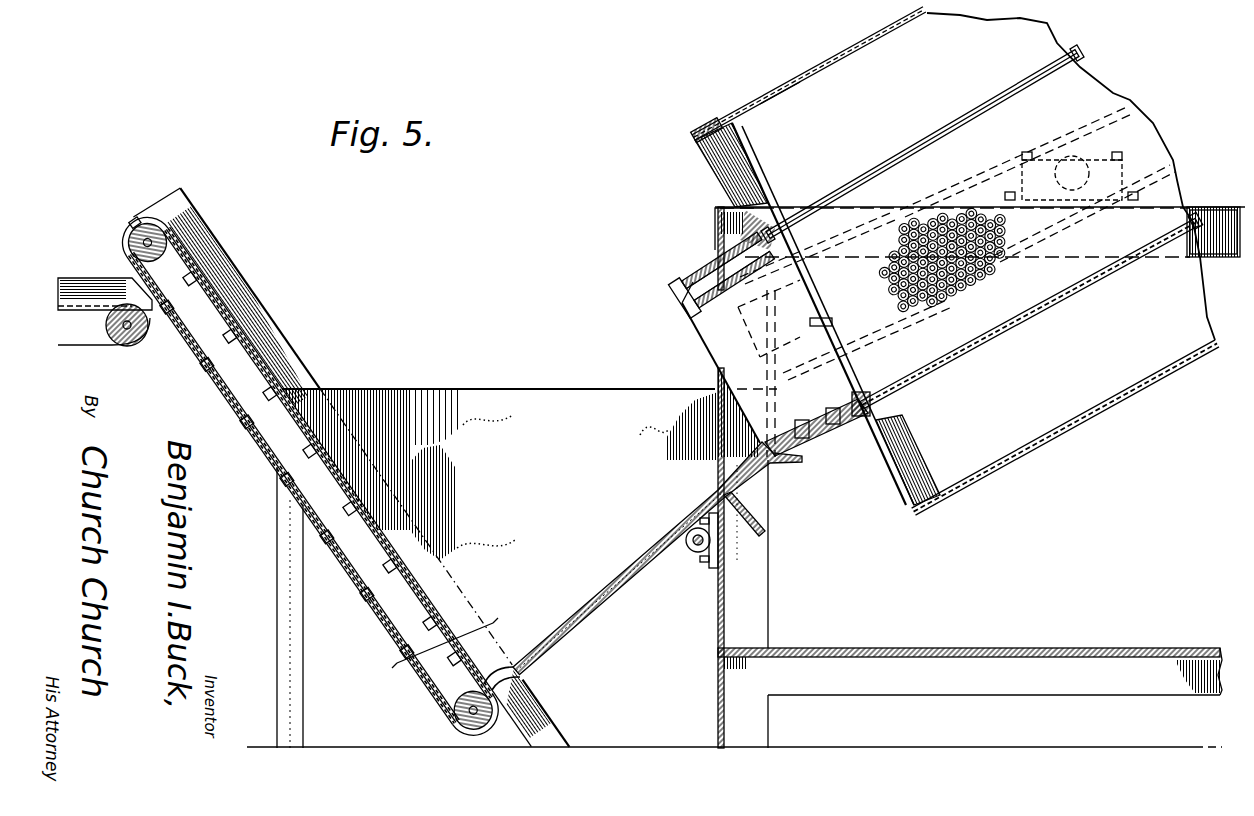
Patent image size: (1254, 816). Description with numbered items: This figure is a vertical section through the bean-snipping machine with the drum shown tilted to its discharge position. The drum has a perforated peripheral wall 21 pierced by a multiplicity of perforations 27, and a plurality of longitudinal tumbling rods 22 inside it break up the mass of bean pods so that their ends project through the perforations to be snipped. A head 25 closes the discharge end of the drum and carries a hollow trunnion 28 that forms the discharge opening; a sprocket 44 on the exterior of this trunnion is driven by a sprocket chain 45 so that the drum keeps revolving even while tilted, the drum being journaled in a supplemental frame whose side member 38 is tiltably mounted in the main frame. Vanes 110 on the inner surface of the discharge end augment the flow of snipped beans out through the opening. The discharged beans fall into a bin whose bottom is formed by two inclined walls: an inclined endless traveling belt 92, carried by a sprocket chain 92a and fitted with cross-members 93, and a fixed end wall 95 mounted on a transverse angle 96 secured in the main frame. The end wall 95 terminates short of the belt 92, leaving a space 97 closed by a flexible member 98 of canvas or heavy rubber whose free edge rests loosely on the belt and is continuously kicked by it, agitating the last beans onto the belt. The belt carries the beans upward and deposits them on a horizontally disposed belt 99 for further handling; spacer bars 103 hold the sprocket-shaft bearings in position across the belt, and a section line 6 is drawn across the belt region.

The spacer bars 103 is at (342, 486).
The inclined endless traveling belt 92 is at (410, 625).
The sprocket chain 92a is at (342, 560).
The cross-members 93 is at (372, 603).
The section line 6 is at (443, 655).
The horizontally disposed belt 99 is at (105, 346).
The end wall 95 is at (618, 576).
The flexible member 98 is at (518, 670).
The space 97 is at (499, 693).
The transverse angle 96 is at (768, 486).
The sprocket chain 45 is at (838, 440).
The hollow trunnion 28 is at (707, 337).
The sprocket 44 is at (722, 231).
The perforations 27 is at (955, 260).
The perforated peripheral wall 21 is at (783, 96).
The longitudinal tumbling rods 22 is at (882, 172).
The vanes 110 is at (748, 178).
The head 25 is at (895, 466).
The side member 38 is at (1218, 250).